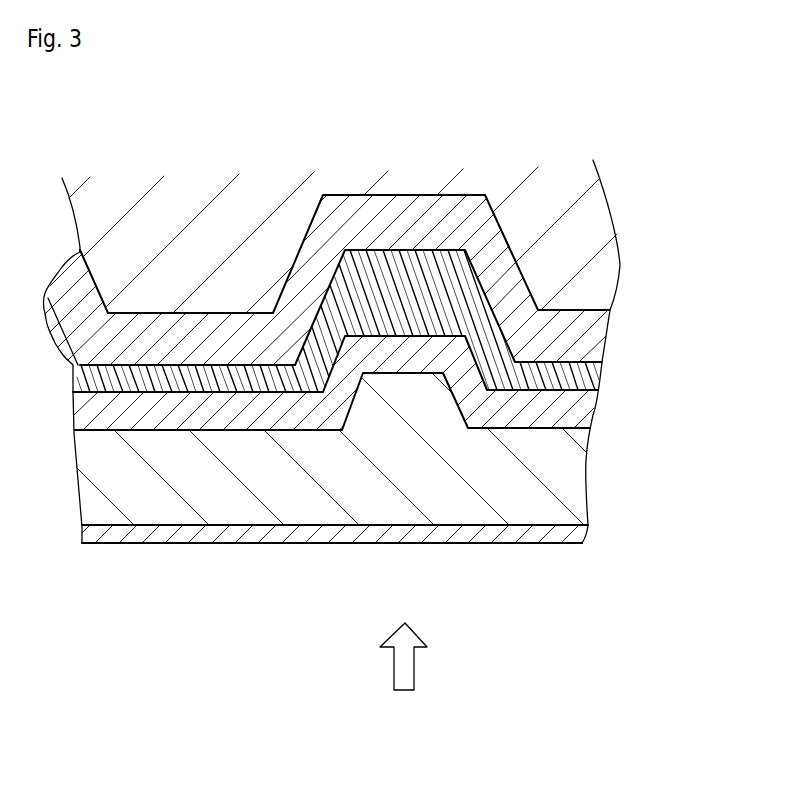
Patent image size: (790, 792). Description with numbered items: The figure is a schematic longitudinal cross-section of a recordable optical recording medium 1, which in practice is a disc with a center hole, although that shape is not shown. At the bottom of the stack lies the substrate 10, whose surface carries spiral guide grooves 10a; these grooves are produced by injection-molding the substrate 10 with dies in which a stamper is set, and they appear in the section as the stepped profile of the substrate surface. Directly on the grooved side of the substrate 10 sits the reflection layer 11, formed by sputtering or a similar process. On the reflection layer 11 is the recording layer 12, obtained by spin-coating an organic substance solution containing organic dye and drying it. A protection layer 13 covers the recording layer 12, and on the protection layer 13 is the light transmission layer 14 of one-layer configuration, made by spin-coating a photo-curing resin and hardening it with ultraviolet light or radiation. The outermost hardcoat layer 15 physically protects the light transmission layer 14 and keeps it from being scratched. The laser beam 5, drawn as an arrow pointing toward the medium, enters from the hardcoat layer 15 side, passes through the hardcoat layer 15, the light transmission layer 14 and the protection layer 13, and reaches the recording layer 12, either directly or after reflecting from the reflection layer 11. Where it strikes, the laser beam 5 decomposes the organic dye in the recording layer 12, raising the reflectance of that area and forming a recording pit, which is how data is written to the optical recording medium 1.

The recordable optical recording medium 1 is at (523, 177).
The laser beam 5 is at (403, 682).
The substrate 10 is at (600, 243).
The spiral guide grooves 10a is at (492, 242).
The reflection layer 11 is at (590, 335).
The recording layer 12 is at (578, 373).
The protection layer 13 is at (550, 413).
The light transmission layer 14 is at (560, 465).
The hardcoat layer 15 is at (210, 544).